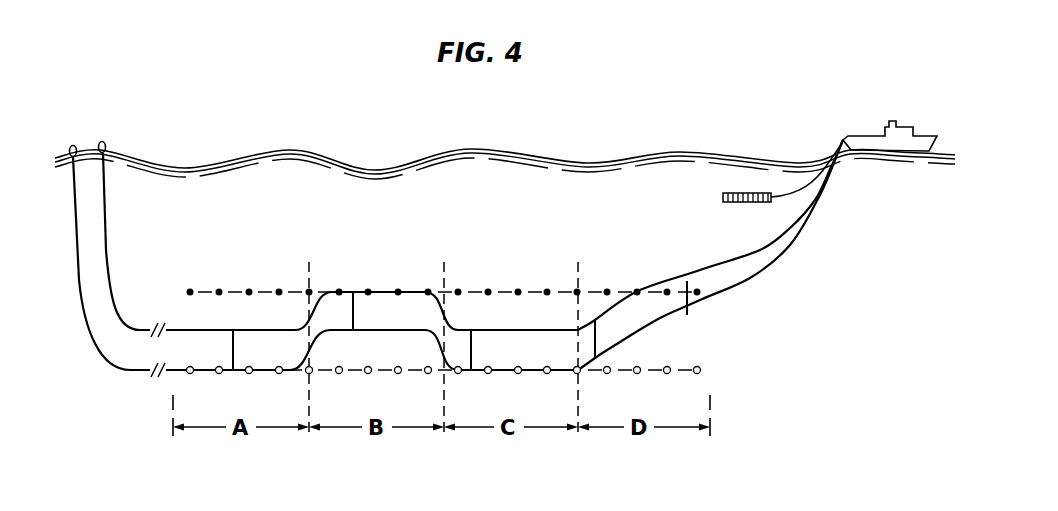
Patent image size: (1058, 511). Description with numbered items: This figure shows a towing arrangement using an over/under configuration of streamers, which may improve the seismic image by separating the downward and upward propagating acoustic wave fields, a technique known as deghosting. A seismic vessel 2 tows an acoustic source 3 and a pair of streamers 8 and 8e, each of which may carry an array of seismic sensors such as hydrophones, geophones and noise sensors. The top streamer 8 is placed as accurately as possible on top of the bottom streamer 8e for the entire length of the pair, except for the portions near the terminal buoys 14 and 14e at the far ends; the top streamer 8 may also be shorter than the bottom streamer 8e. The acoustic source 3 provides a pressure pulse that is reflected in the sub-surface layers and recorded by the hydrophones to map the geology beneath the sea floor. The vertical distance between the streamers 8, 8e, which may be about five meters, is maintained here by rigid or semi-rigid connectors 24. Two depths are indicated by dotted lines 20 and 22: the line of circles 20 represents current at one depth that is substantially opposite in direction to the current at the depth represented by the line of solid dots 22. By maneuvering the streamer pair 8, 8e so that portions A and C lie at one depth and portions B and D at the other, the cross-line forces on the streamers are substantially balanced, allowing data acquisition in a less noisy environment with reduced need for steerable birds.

The seismic vessel 2 is at (928, 139).
The acoustic source 3 is at (737, 192).
The streamer 8 is at (762, 250).
The streamer 8e is at (812, 224).
The terminal buoy 14 is at (105, 142).
The terminal buoy 14e is at (72, 146).
The line of circles 20 is at (720, 372).
The line of solid dots 22 is at (720, 288).
The connector 24 is at (232, 350).